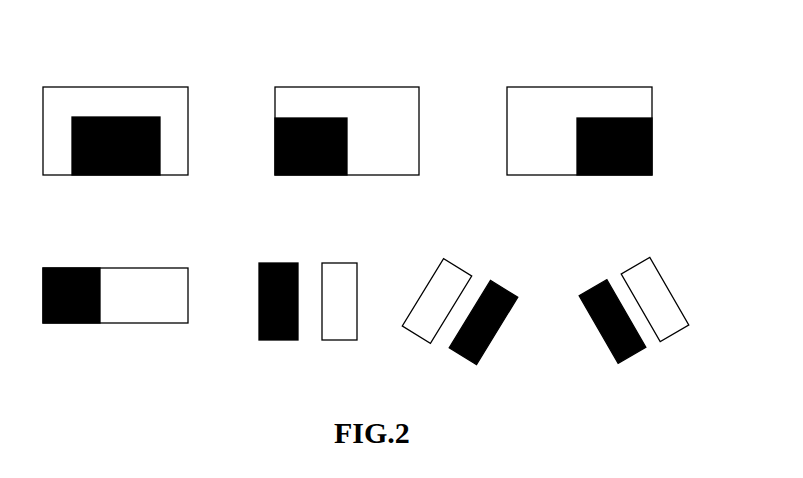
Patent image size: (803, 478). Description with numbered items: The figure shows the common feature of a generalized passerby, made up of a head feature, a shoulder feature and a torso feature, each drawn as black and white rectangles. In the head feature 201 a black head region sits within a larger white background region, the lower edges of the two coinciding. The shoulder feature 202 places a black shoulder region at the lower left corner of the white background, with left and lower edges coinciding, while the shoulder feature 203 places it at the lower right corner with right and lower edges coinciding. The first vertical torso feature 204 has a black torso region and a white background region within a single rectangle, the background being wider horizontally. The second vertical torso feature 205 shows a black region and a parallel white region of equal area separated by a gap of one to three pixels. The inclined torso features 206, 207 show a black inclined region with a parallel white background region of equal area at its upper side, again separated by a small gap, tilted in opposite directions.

The head feature 201 is at (124, 103).
The shoulder feature 202 is at (355, 103).
The shoulder feature 203 is at (587, 103).
The first vertical torso feature 204 is at (124, 267).
The second vertical torso feature 205 is at (329, 273).
The inclined torso feature 206 is at (483, 285).
The inclined torso feature 207 is at (641, 284).